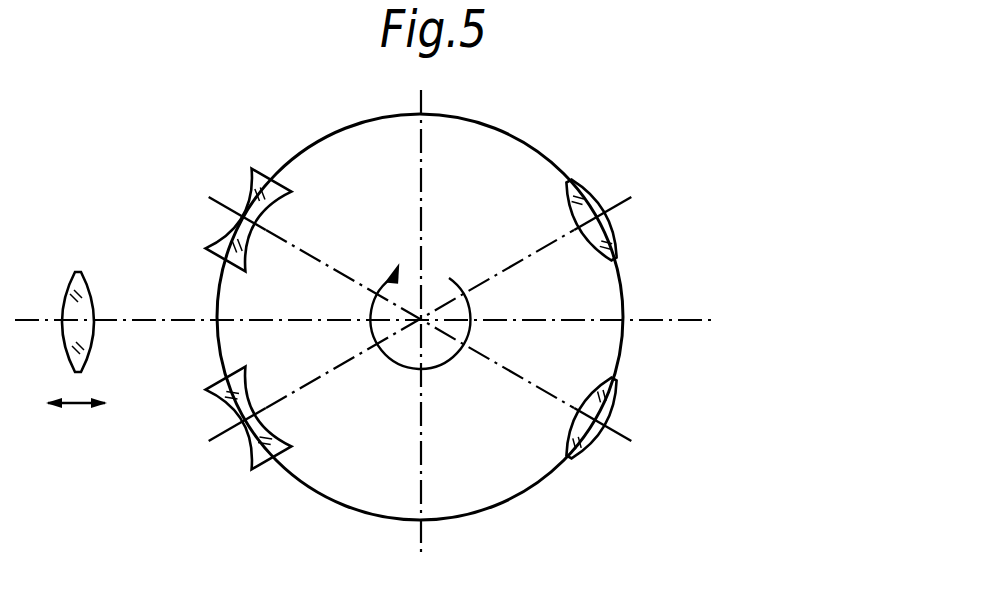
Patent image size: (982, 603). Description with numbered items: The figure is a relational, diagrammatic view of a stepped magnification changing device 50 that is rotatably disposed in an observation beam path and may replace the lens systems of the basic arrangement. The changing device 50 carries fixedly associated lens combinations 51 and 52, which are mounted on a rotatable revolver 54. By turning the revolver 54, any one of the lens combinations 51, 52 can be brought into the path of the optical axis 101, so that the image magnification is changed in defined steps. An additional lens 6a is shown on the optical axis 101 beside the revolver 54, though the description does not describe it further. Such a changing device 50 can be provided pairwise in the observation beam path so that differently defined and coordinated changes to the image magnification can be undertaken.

The movable lens 6a is at (78, 270).
The stepped magnification changing device 50 is at (586, 491).
The lens combination 51 is at (248, 213).
The lens combination 52 is at (595, 200).
The rotatable revolver 54 is at (458, 520).
The optical axis 101 is at (692, 320).